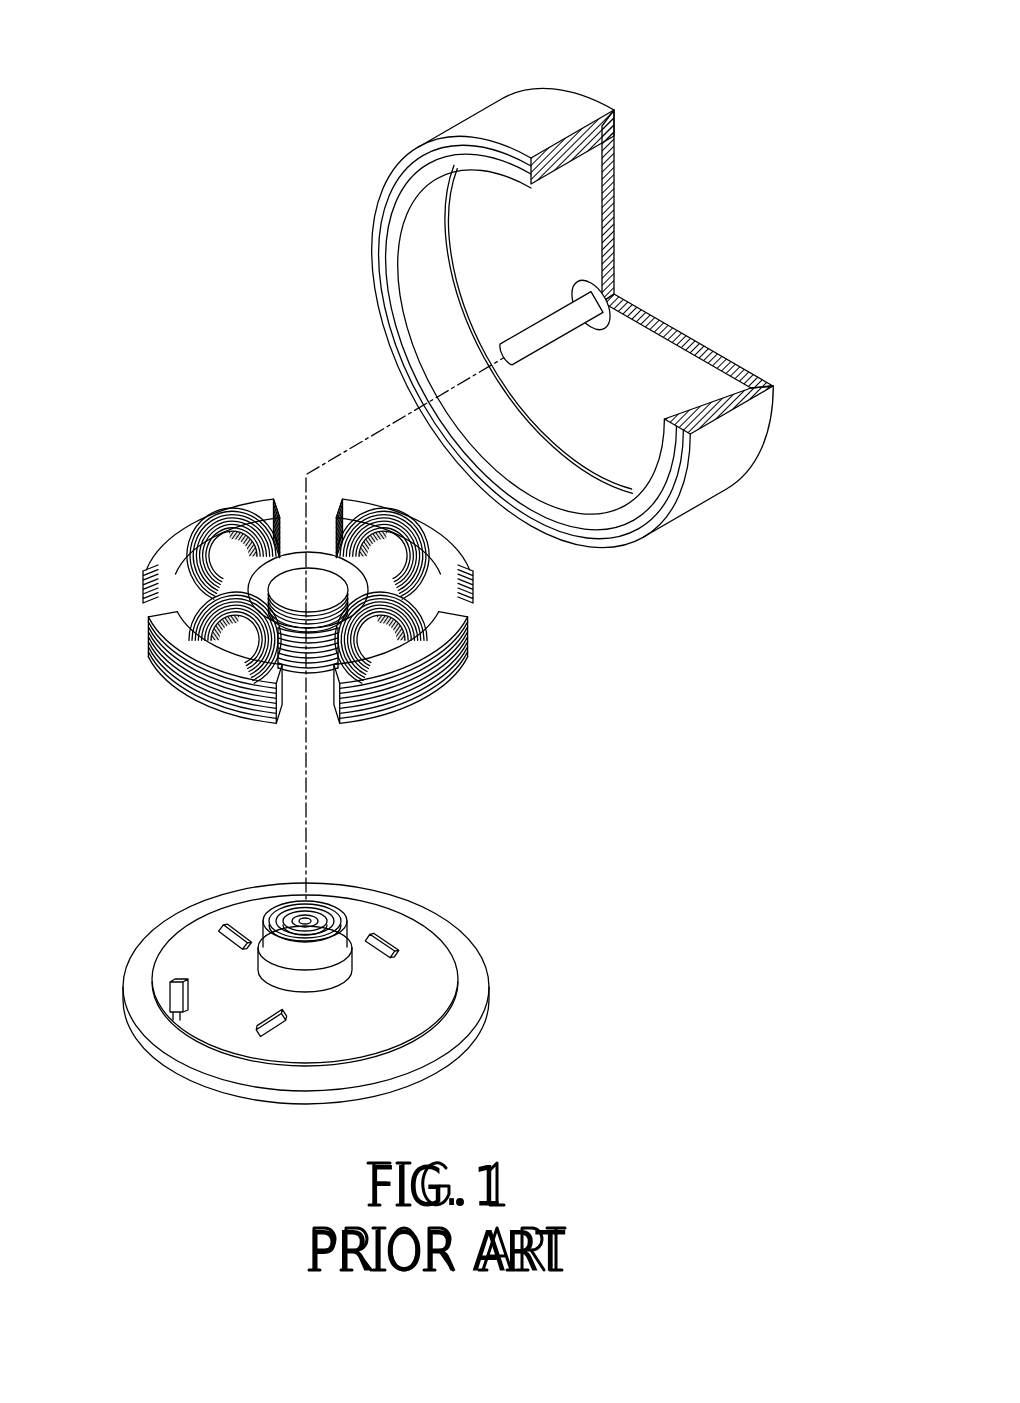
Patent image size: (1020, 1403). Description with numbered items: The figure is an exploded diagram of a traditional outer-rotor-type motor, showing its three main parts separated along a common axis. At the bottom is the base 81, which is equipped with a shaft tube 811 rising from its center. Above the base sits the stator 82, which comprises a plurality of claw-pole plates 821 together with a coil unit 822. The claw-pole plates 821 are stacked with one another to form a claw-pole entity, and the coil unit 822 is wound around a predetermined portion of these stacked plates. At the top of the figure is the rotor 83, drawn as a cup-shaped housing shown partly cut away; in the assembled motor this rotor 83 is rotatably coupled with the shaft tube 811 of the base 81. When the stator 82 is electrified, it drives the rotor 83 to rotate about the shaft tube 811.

The base 81 is at (346, 969).
The shaft tube 811 is at (352, 937).
The stator 82 is at (366, 587).
The claw-pole plates 821 is at (475, 575).
The coil unit 822 is at (237, 535).
The rotor 83 is at (655, 143).